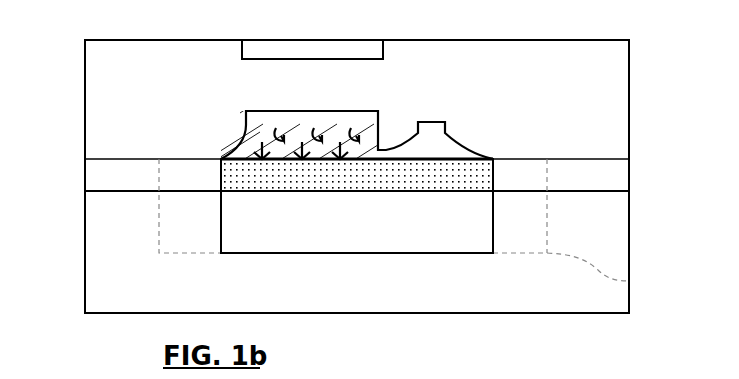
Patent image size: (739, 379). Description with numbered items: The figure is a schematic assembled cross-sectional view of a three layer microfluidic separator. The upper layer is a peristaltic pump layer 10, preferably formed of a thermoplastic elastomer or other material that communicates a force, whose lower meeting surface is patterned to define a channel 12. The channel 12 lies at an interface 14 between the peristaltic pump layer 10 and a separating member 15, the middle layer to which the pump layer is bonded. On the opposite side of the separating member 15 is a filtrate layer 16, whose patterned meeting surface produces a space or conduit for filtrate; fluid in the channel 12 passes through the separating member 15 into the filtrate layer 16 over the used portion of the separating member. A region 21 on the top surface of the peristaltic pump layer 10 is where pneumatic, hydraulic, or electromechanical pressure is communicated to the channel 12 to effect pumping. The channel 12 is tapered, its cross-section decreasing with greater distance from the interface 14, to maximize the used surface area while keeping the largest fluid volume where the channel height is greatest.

The peristaltic pump layer 10 is at (138, 94).
The channel 12 is at (259, 120).
The interface 14 is at (108, 158).
The separating member 15 is at (138, 186).
The filtrate layer 16 is at (136, 290).
The region 21 is at (337, 50).